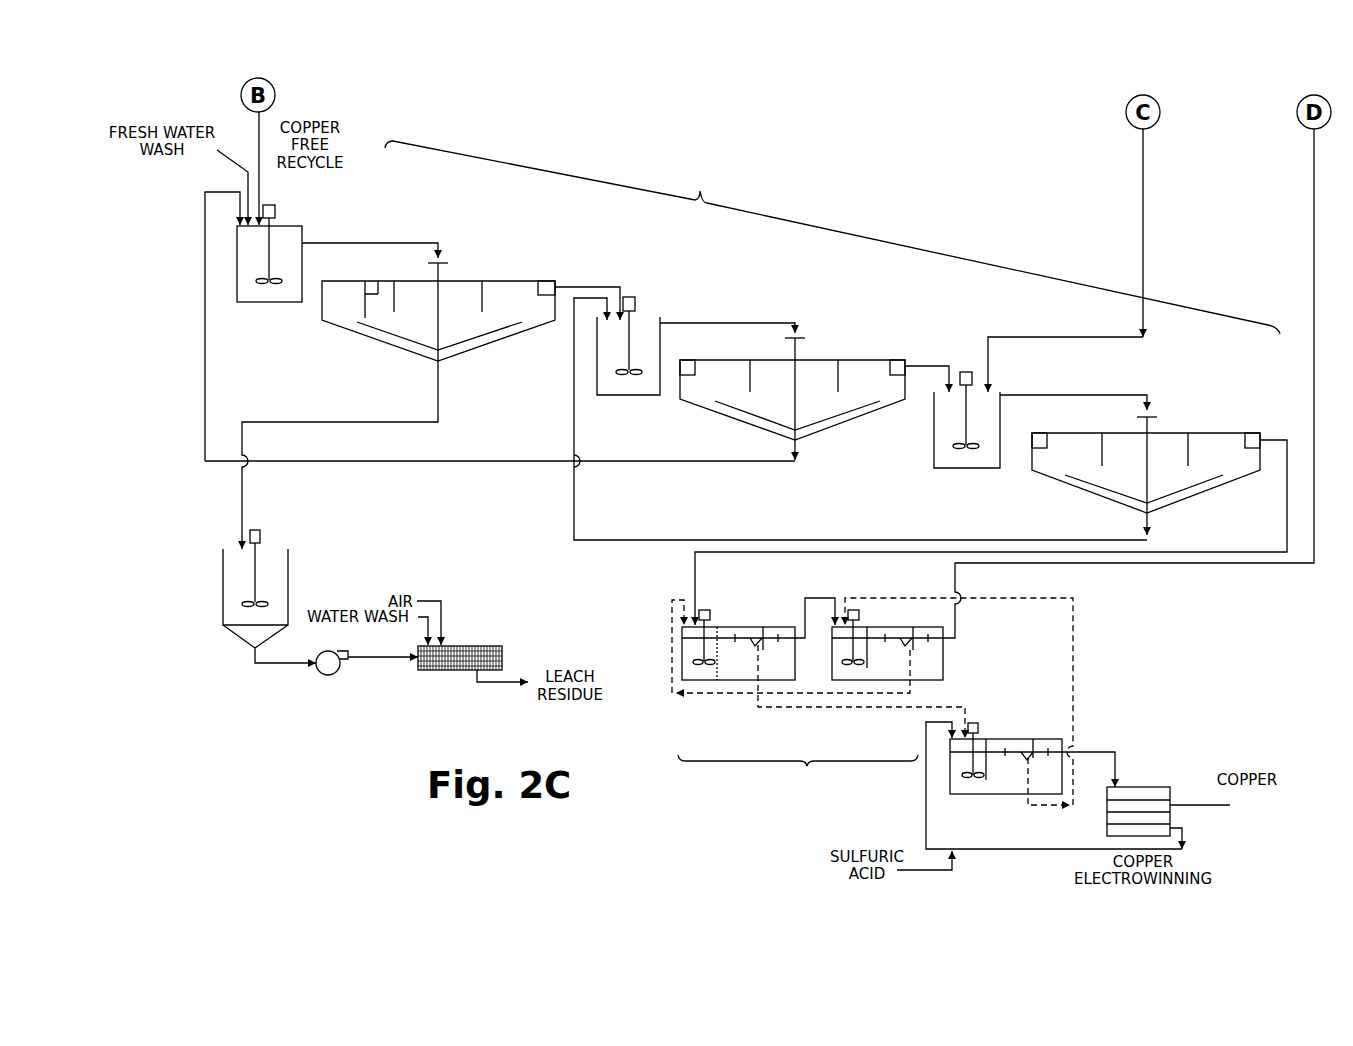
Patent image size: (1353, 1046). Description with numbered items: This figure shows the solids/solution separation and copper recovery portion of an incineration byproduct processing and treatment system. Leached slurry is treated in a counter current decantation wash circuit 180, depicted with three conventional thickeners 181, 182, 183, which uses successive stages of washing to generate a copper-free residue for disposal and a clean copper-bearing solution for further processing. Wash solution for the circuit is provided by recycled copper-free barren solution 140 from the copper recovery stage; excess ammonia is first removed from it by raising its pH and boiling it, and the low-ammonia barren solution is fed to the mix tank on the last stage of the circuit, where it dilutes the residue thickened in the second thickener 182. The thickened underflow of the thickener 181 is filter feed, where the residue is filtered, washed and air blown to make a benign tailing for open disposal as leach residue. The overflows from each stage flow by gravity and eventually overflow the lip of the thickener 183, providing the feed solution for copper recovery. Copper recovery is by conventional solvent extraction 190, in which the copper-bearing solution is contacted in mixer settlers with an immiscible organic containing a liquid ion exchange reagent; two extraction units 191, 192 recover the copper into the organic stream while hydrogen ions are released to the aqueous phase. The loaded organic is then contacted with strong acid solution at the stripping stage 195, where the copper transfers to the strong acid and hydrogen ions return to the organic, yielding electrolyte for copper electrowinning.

The recycled copper-free barren solution 140 is at (259, 176).
The counter current decantation wash circuit 180 is at (832, 237).
The thickener 181 is at (460, 352).
The thickener 182 is at (835, 428).
The thickener 183 is at (1185, 500).
The solvent extraction 190 is at (872, 701).
The extraction unit 191 is at (750, 627).
The extraction unit 192 is at (945, 663).
The strong acid contacting stage 195 is at (1003, 738).